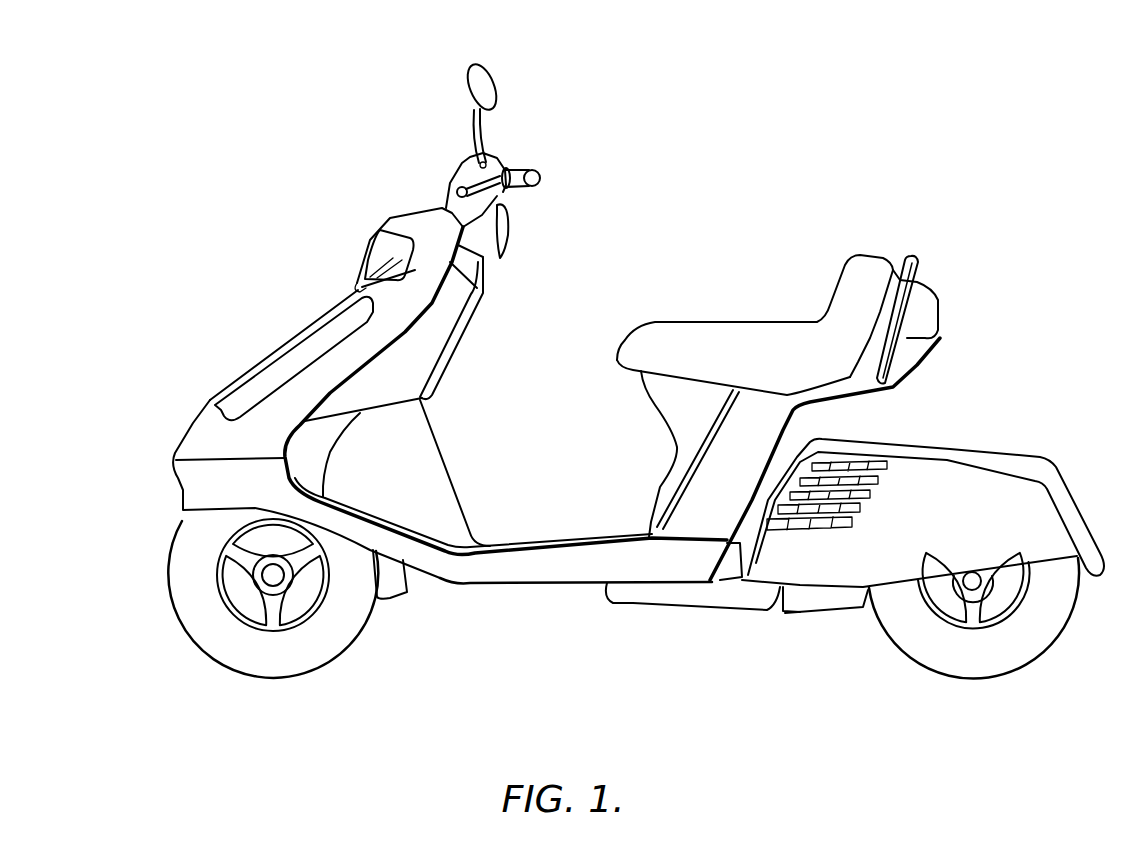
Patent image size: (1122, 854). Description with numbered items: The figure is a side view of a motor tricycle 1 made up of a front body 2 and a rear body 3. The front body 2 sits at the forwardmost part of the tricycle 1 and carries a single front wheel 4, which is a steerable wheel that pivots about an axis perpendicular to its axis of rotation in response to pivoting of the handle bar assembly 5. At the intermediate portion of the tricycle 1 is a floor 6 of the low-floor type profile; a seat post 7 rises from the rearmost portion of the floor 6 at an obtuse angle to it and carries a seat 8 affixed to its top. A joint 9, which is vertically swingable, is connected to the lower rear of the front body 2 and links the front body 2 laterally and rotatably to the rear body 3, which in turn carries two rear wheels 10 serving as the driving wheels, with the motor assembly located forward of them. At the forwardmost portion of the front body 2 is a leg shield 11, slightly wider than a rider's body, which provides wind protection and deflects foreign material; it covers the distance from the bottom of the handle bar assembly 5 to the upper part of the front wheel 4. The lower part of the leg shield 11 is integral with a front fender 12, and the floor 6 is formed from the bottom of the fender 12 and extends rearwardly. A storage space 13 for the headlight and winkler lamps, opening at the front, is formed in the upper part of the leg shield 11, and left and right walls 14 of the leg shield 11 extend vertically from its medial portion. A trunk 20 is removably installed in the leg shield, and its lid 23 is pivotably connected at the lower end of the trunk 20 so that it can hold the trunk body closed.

The tricycle 1 is at (599, 245).
The front body 2 is at (463, 480).
The rear body 3 is at (988, 415).
The front wheel 4 is at (263, 665).
The handle bar assembly 5 is at (535, 177).
The floor 6 is at (555, 542).
The seat post 7 is at (713, 468).
The seat 8 is at (722, 334).
The joint 9 is at (733, 603).
The rear wheels 10 is at (1027, 652).
The leg shield 11 is at (397, 312).
The front fender 12 is at (189, 481).
The storage space 13 is at (413, 223).
The wall 14 is at (356, 352).
The trunk 20 is at (284, 335).
The lid 23 is at (258, 377).